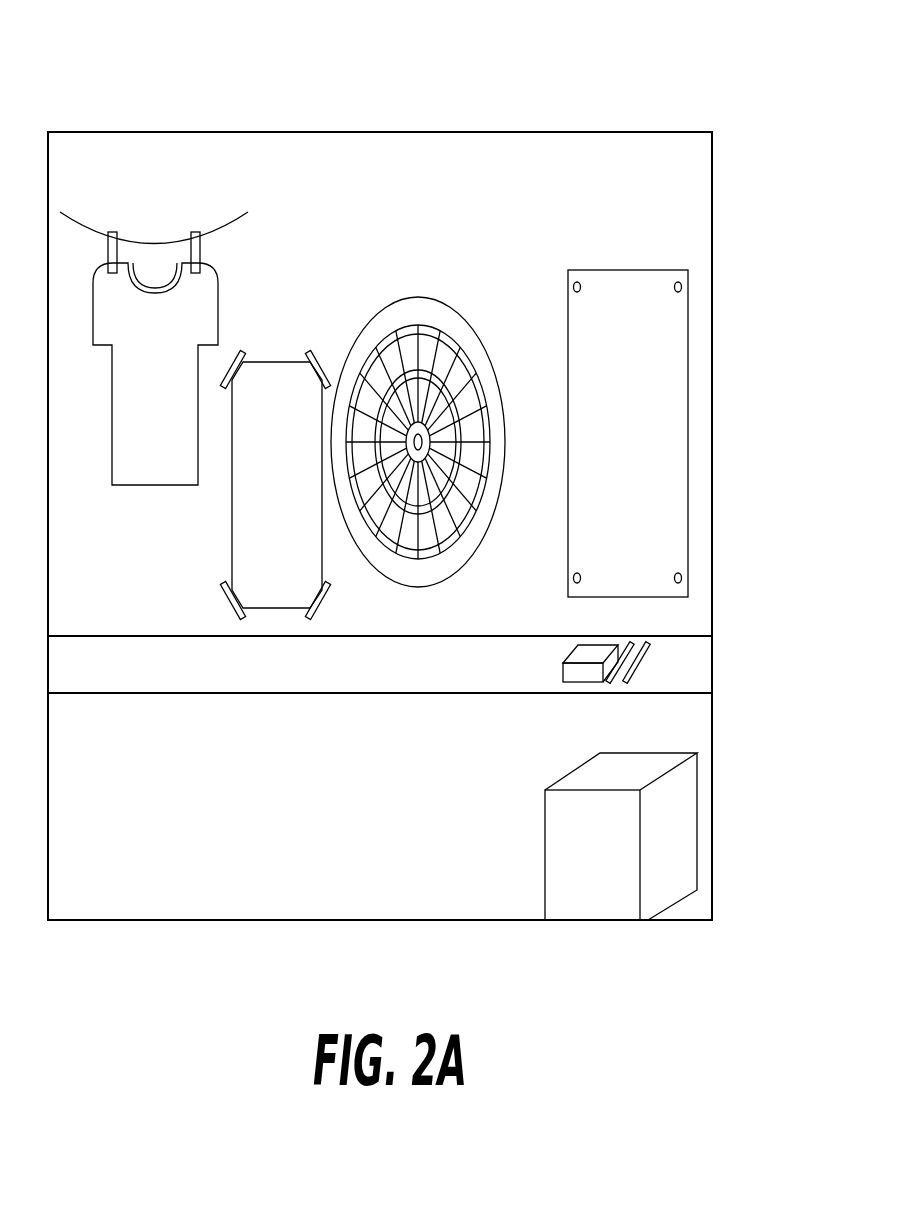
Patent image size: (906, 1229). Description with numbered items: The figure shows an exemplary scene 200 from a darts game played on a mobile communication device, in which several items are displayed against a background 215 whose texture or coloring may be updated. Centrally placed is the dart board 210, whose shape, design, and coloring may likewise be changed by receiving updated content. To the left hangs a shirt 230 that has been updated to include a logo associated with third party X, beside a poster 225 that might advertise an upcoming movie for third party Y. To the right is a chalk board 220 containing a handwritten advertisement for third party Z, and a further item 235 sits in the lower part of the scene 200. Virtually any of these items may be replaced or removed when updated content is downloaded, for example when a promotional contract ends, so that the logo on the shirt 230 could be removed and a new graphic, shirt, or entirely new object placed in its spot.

The scene 200 is at (152, 78).
The background 215 is at (565, 157).
The dart board 210 is at (428, 306).
The chalk board 220 is at (683, 331).
The poster 225 is at (240, 541).
The shirt 230 is at (135, 452).
The item 235 is at (622, 853).